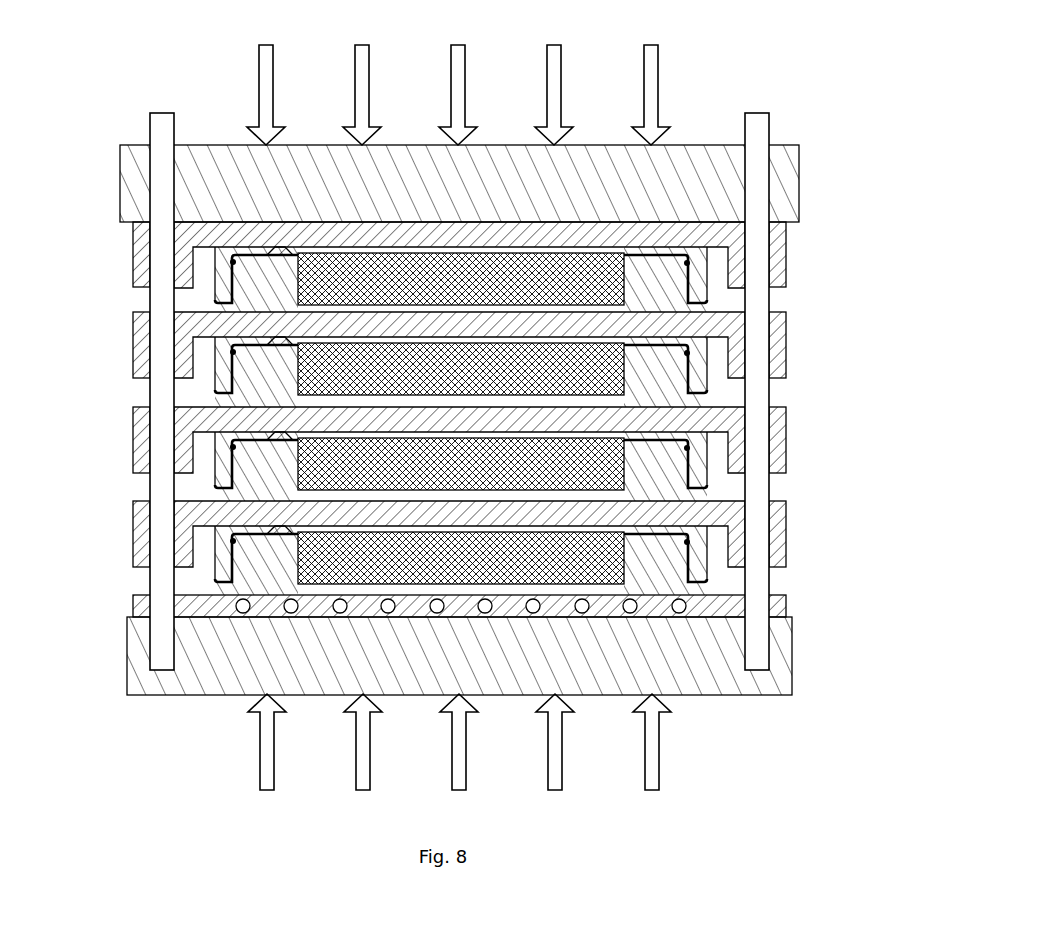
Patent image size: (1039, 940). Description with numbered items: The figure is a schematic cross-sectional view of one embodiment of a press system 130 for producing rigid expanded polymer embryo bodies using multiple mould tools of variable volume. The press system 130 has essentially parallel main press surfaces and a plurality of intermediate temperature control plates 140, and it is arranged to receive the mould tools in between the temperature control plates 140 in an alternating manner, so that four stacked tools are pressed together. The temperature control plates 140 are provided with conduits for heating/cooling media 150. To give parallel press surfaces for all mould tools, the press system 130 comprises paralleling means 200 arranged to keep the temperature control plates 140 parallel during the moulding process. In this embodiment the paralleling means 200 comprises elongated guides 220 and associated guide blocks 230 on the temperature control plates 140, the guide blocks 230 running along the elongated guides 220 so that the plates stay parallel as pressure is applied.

The press system 130 is at (454, 359).
The conduits for heating/cooling media 150 is at (699, 145).
The temperature control plate 140 is at (790, 234).
The paralleling means 200 is at (806, 282).
The guide block 230 is at (773, 442).
The elongated guide 220 is at (757, 478).